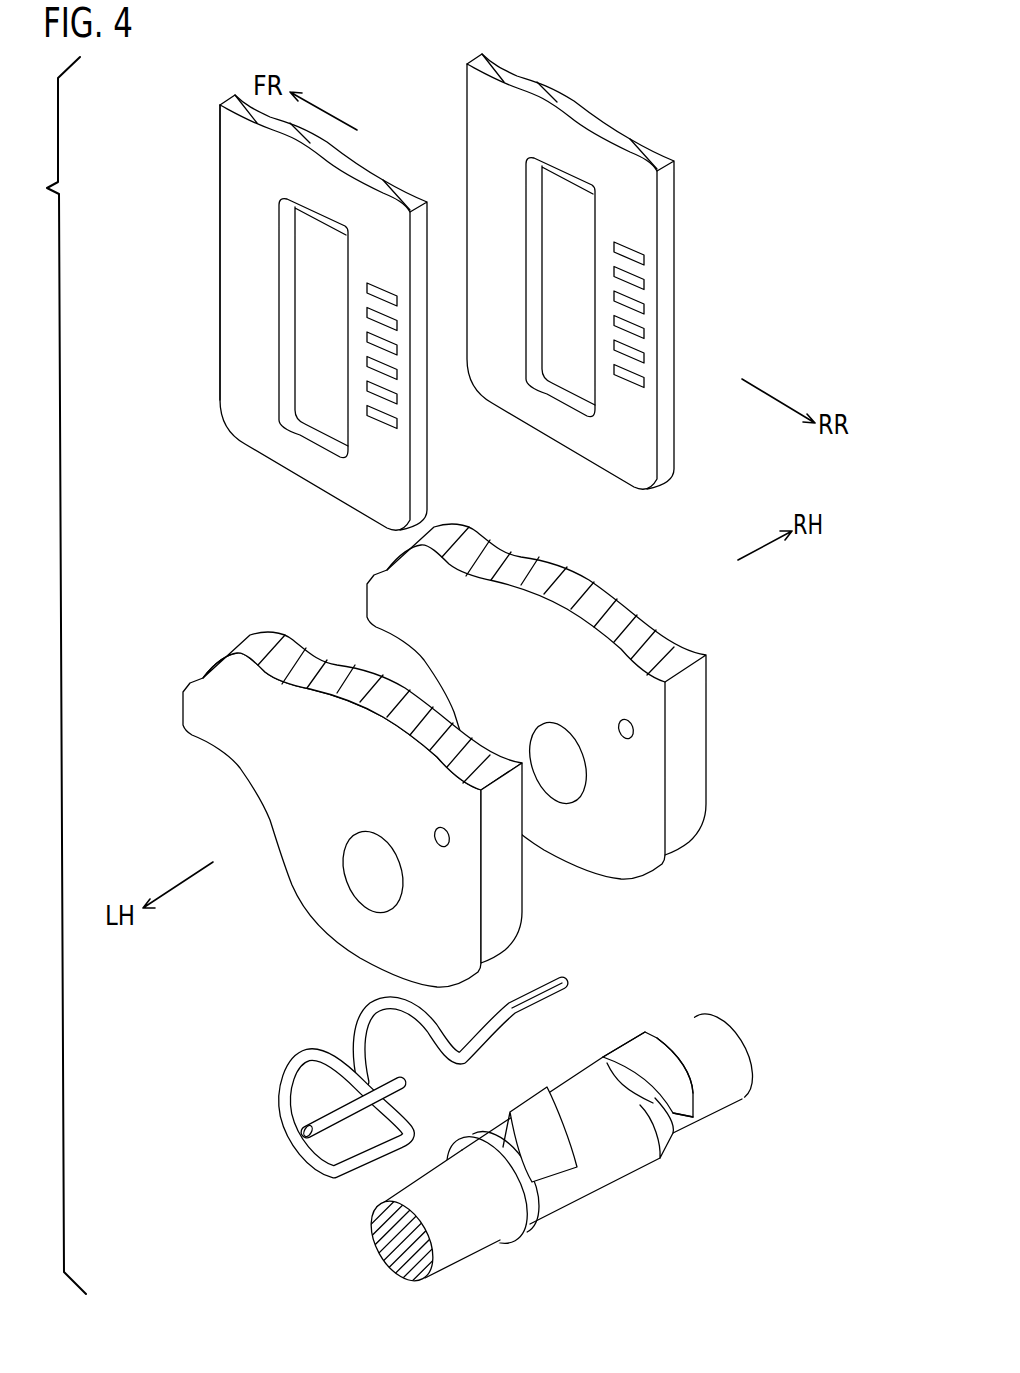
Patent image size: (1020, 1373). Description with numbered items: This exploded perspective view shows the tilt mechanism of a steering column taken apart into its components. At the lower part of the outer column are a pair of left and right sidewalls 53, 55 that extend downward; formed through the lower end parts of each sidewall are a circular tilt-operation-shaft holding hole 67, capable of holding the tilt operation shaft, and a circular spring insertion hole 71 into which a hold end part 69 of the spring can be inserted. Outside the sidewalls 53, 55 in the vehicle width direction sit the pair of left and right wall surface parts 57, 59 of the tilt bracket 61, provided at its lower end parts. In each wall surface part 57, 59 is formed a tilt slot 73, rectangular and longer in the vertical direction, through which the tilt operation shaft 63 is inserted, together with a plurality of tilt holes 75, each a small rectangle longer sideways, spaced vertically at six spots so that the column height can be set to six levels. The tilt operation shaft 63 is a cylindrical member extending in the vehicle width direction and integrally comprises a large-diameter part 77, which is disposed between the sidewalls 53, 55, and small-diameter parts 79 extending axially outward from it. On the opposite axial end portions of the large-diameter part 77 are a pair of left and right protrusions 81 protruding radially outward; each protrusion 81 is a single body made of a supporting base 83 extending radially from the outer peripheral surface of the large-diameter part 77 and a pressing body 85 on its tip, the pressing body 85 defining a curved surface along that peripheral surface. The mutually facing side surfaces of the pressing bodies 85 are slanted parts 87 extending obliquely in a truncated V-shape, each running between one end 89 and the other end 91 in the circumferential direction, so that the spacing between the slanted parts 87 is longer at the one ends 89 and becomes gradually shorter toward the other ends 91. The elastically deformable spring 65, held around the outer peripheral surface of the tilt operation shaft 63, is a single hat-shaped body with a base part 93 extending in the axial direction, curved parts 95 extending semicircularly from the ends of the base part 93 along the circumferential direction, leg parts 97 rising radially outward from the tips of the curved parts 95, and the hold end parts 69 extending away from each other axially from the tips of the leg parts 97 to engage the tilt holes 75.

The sidewall 53 is at (354, 808).
The sidewall 55 is at (627, 686).
The wall surface part 57 is at (296, 312).
The wall surface part 59 is at (640, 203).
The tilt bracket 61 is at (207, 190).
The tilt operation shaft 63 is at (530, 1142).
The spring 65 is at (387, 1102).
The tilt-operation-shaft holding hole 67 is at (370, 878).
The hold end part 69 is at (537, 1002).
The spring insertion hole 71 is at (447, 843).
The tilt slot 73 is at (313, 358).
The tilt hole 75 is at (390, 420).
The large-diameter part 77 is at (614, 1113).
The small-diameter part 79 is at (437, 1222).
The protrusion 81 is at (598, 1107).
The supporting base 83 is at (656, 1128).
The pressing body 85 is at (675, 1065).
The slanted part 87 is at (624, 1044).
The one end 89 is at (683, 1115).
The other end 91 is at (630, 1083).
The base part 93 is at (357, 1162).
The curved part 95 is at (280, 1078).
The leg part 97 is at (470, 1048).